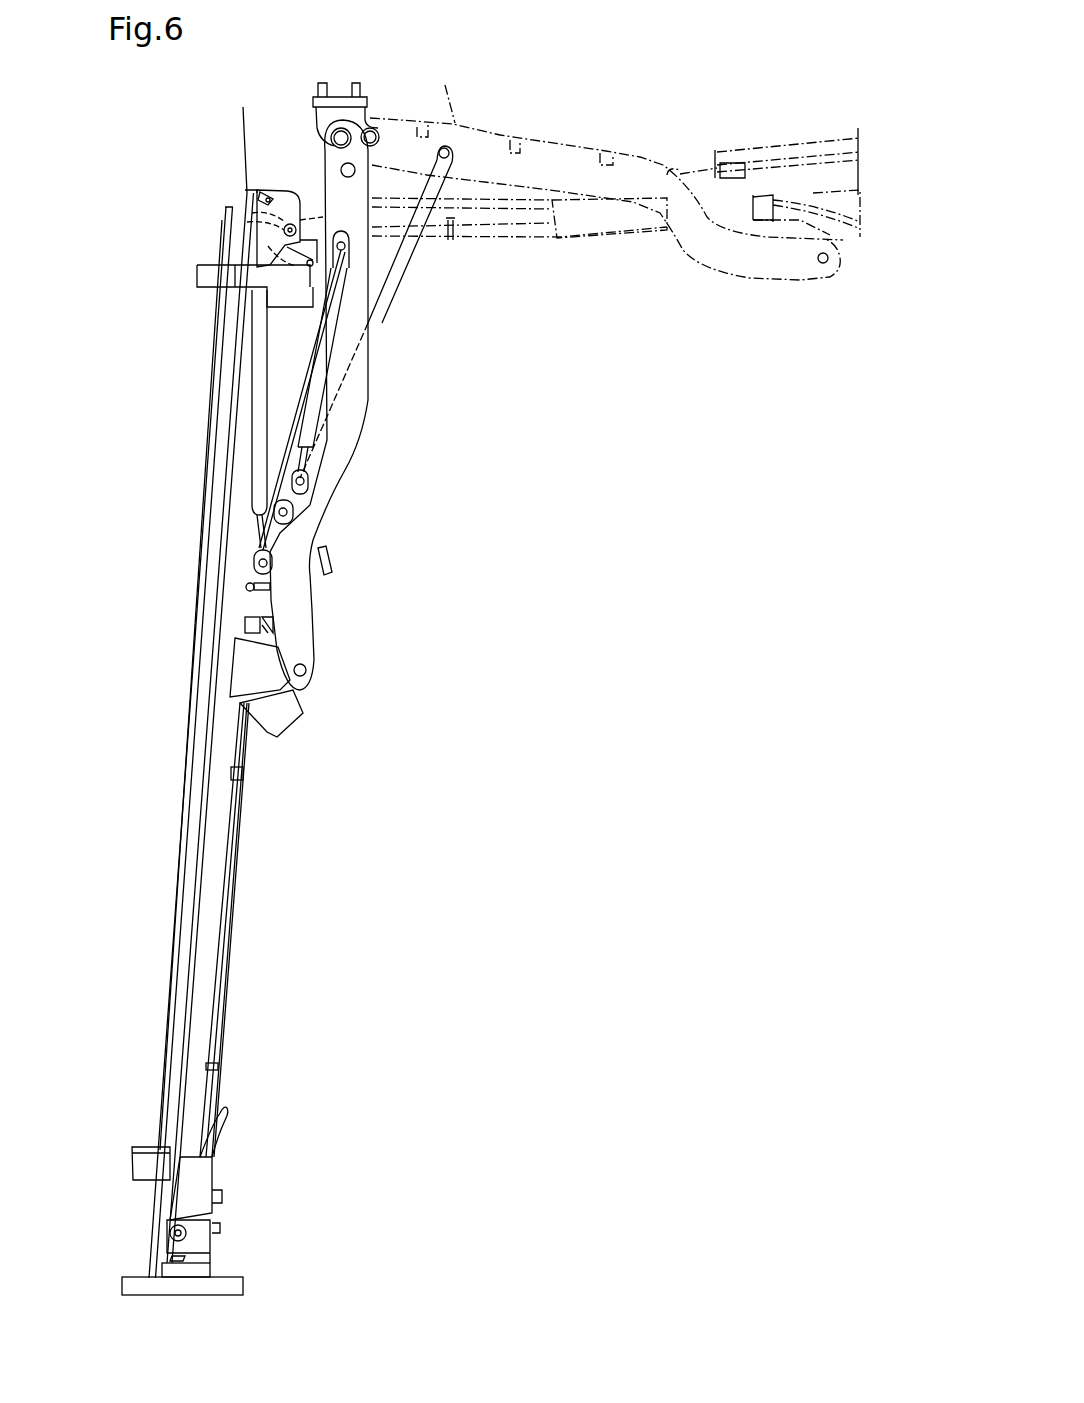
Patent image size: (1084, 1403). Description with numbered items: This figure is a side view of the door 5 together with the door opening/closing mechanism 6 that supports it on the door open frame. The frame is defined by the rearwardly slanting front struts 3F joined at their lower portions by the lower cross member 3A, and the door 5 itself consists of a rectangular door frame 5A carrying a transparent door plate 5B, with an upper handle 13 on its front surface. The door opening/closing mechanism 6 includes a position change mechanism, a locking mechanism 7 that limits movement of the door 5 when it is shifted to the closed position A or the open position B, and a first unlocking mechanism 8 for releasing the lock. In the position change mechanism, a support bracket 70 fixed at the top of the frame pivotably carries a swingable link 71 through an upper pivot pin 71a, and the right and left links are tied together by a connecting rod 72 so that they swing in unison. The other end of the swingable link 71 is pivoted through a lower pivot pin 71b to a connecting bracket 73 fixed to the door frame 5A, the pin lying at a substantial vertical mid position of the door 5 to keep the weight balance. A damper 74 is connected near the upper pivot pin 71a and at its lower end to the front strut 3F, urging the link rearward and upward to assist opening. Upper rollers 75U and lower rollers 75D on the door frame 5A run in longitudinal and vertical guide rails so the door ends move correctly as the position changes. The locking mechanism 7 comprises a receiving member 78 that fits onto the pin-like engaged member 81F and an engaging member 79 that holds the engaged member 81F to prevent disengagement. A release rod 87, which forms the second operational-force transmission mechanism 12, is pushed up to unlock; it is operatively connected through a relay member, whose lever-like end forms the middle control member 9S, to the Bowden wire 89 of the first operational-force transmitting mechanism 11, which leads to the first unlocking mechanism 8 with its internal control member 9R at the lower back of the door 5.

The door opening/closing mechanism 6 is at (383, 88).
The support bracket 70 is at (320, 118).
The upper pivot pin 71a is at (340, 127).
The swingable link 71 is at (357, 200).
The engaging member 79 is at (242, 138).
The connecting rod 72 is at (342, 166).
The closed position A is at (195, 185).
The open position B is at (641, 148).
The locking mechanism 7 is at (240, 195).
The engaged member 81F is at (268, 201).
The upper roller 75U is at (285, 229).
The receiving member 78 is at (263, 247).
The damper 74 is at (380, 210).
The release rod 87 is at (293, 390).
The second operational-force transmission mechanism 12 is at (285, 435).
The front strut 3F is at (212, 540).
The middle control member 9S is at (333, 557).
The connecting bracket 73 is at (240, 668).
The lower pivot pin 71b is at (232, 697).
The door plate 5B is at (202, 807).
The door frame 5A is at (223, 888).
The door 5 is at (804, 128).
The Bowden wire 89 is at (216, 995).
The first operational-force transmitting mechanism 11 is at (218, 1050).
The upper handle 13 is at (138, 1163).
The internal control member 9R is at (222, 1110).
The first unlocking mechanism 8 is at (226, 1181).
The lower roller 75D is at (172, 1233).
The lower cross member 3A is at (230, 1283).